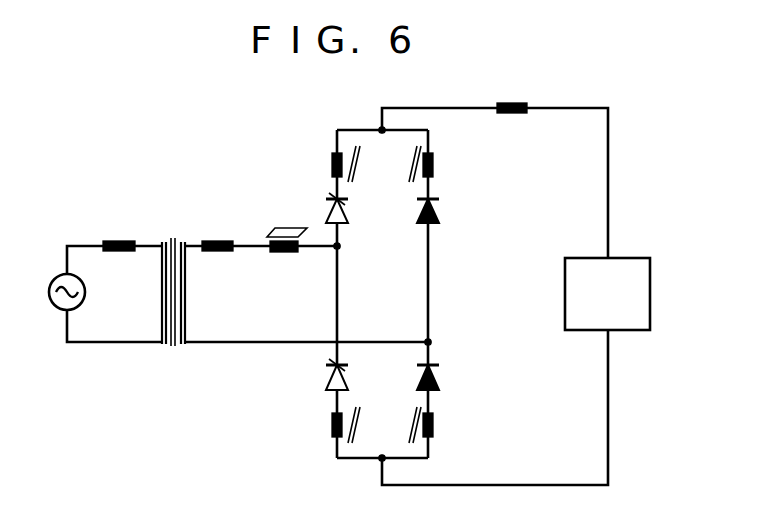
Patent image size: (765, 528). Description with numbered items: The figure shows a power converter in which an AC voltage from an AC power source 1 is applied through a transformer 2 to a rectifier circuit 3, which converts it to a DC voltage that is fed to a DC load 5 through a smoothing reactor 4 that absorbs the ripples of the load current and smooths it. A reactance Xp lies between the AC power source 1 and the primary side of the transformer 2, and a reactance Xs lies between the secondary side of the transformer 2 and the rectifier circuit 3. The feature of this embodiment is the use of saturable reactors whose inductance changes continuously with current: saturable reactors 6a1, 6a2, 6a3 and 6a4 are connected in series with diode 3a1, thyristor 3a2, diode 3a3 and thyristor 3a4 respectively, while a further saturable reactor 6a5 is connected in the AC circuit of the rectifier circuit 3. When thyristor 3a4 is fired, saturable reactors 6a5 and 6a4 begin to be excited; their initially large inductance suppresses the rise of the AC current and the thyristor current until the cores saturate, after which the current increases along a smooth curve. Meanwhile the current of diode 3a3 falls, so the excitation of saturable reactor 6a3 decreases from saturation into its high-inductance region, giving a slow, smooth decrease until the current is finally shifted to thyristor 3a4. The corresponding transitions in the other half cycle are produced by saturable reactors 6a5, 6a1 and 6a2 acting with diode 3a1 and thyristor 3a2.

The AC power source 1 is at (55, 279).
The reactance Xp is at (112, 240).
The transformer 2 is at (178, 233).
The reactance Xs is at (208, 240).
The saturable reactor 6a5 is at (276, 253).
The rectifier circuit 3 is at (363, 107).
The diode 3a1 is at (440, 380).
The thyristor 3a2 is at (348, 380).
The diode 3a3 is at (439, 214).
The thyristor 3a4 is at (348, 214).
The saturable reactor 6a1 is at (434, 431).
The saturable reactor 6a2 is at (357, 432).
The saturable reactor 6a3 is at (434, 172).
The saturable reactor 6a4 is at (357, 172).
The smoothing reactor 4 is at (520, 104).
The DC load 5 is at (651, 262).